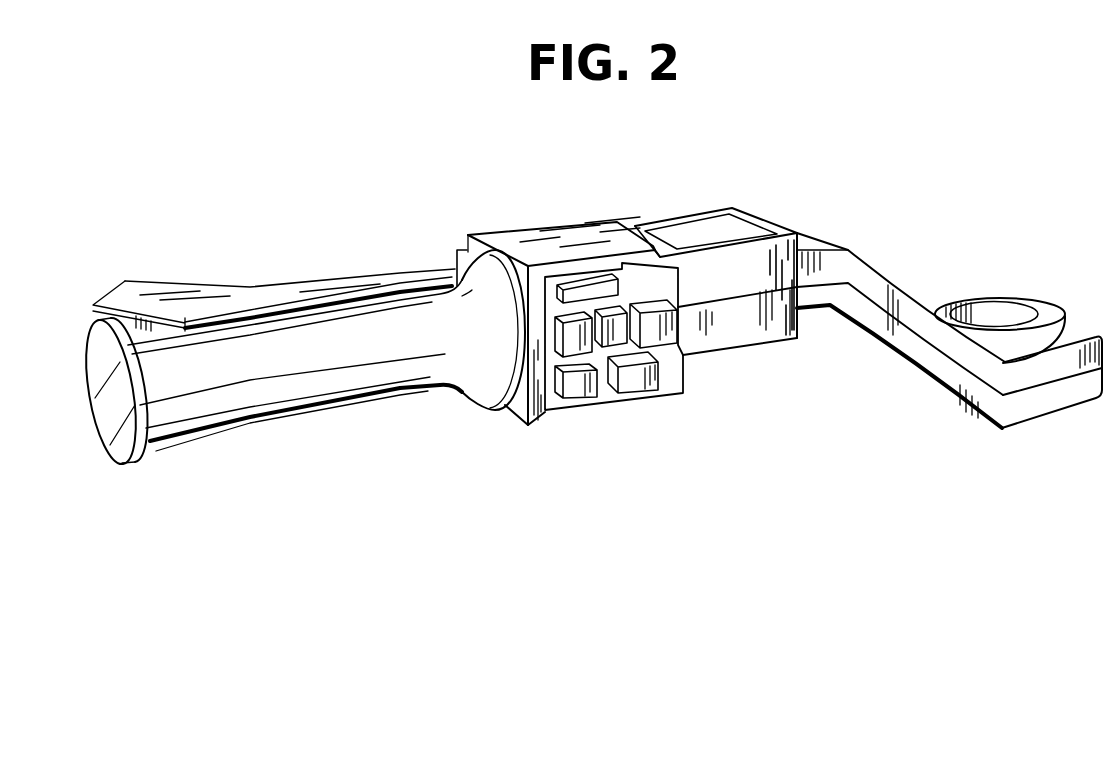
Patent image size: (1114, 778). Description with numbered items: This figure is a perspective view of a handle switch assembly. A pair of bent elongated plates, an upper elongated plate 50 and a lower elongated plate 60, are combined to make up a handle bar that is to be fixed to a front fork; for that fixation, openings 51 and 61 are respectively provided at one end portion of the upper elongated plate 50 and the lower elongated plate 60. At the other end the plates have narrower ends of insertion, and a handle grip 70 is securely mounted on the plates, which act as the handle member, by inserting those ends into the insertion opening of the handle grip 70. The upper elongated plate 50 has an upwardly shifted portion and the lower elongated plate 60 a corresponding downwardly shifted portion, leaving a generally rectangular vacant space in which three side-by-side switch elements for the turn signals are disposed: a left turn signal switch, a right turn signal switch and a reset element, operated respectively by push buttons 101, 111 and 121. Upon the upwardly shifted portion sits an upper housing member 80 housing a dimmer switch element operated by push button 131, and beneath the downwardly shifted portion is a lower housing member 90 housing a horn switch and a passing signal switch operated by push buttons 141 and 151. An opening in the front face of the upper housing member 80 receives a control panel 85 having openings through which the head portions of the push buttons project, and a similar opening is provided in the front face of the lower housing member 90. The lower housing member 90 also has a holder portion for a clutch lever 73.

The upper elongated plate 50 is at (873, 275).
The opening 51 is at (995, 310).
The lower elongated plate 60 is at (873, 317).
The opening 61 is at (1014, 426).
The handle grip 70 is at (313, 415).
The clutch lever 73 is at (228, 298).
The upper housing member 80 is at (567, 227).
The control panel 85 is at (678, 284).
The lower housing member 90 is at (760, 343).
The push button 101 is at (563, 336).
The push button 111 is at (617, 330).
The push button 121 is at (667, 320).
The push button 131 is at (610, 277).
The push button 141 is at (585, 383).
The push button 151 is at (640, 388).